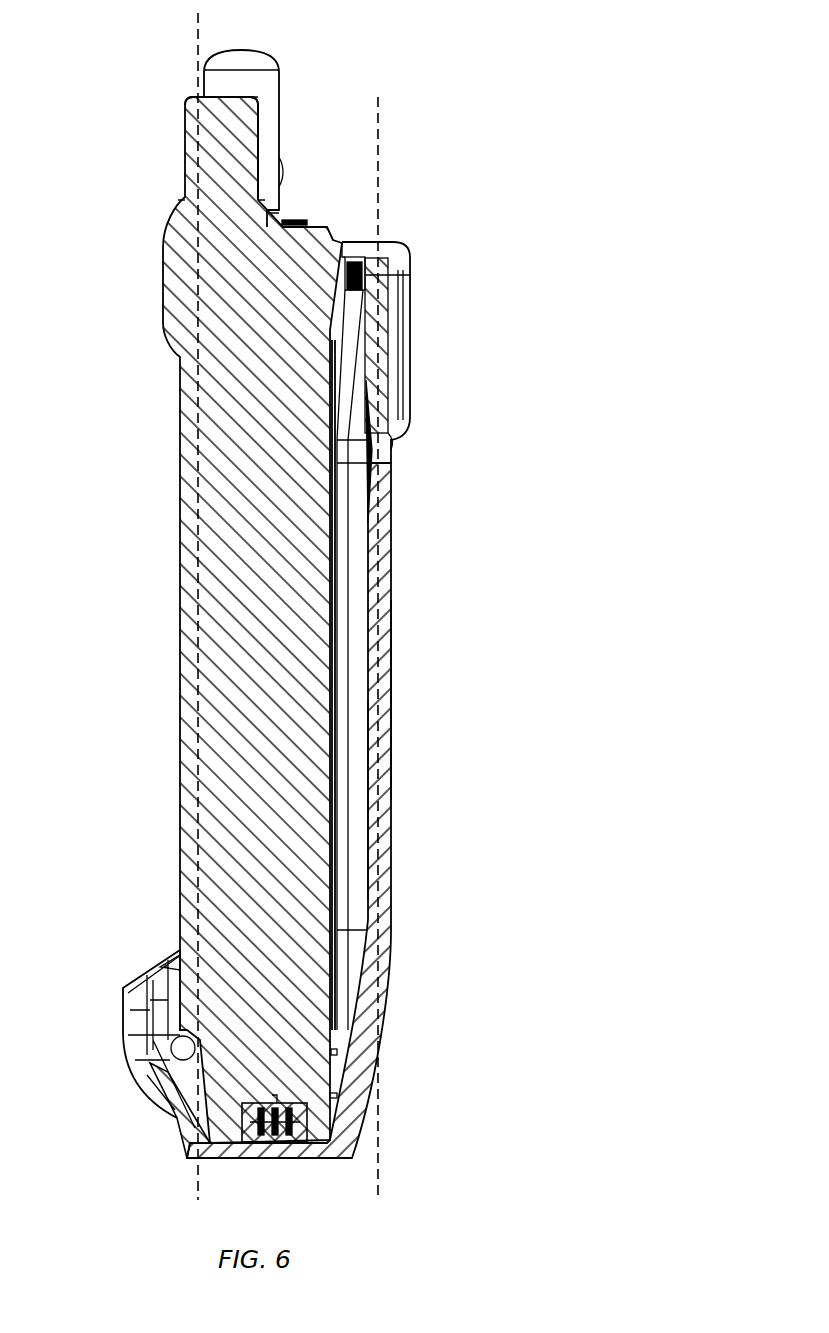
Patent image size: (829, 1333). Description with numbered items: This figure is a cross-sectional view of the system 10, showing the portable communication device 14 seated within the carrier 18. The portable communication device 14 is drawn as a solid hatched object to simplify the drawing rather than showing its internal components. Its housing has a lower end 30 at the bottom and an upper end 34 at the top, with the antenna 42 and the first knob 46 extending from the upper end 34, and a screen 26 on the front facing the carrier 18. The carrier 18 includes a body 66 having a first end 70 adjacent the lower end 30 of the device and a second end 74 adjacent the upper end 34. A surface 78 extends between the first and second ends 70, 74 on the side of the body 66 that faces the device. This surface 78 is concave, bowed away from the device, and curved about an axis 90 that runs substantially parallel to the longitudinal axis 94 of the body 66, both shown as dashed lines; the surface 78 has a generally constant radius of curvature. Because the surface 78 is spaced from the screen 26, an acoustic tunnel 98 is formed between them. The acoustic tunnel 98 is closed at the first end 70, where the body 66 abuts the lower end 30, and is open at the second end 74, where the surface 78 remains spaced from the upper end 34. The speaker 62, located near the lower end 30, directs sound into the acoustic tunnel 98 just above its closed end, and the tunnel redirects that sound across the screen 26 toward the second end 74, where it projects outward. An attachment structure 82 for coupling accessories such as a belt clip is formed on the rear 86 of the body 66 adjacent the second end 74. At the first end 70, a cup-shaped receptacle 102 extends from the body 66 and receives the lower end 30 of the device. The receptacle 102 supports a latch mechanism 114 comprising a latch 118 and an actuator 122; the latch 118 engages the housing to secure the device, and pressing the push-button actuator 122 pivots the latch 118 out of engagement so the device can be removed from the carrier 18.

The system 10 is at (406, 66).
The portable communication device 14 is at (178, 432).
The carrier 18 is at (380, 885).
The screen 26 is at (340, 590).
The lower end 30 is at (313, 1143).
The upper end 34 is at (305, 222).
The antenna 42 is at (256, 60).
The first knob 46 is at (250, 118).
The speaker 62 is at (342, 1060).
The body 66 is at (392, 697).
The first end 70 is at (360, 1097).
The second end 74 is at (388, 244).
The surface 78 is at (355, 545).
The attachment structure 82 is at (410, 338).
The rear 86 is at (390, 786).
The axis 90 is at (198, 40).
The longitudinal axis 94 is at (380, 160).
The acoustic tunnel 98 is at (353, 483).
The receptacle 102 is at (193, 1143).
The latch mechanism 114 is at (122, 980).
The latch 118 is at (168, 1063).
The actuator 122 is at (170, 957).